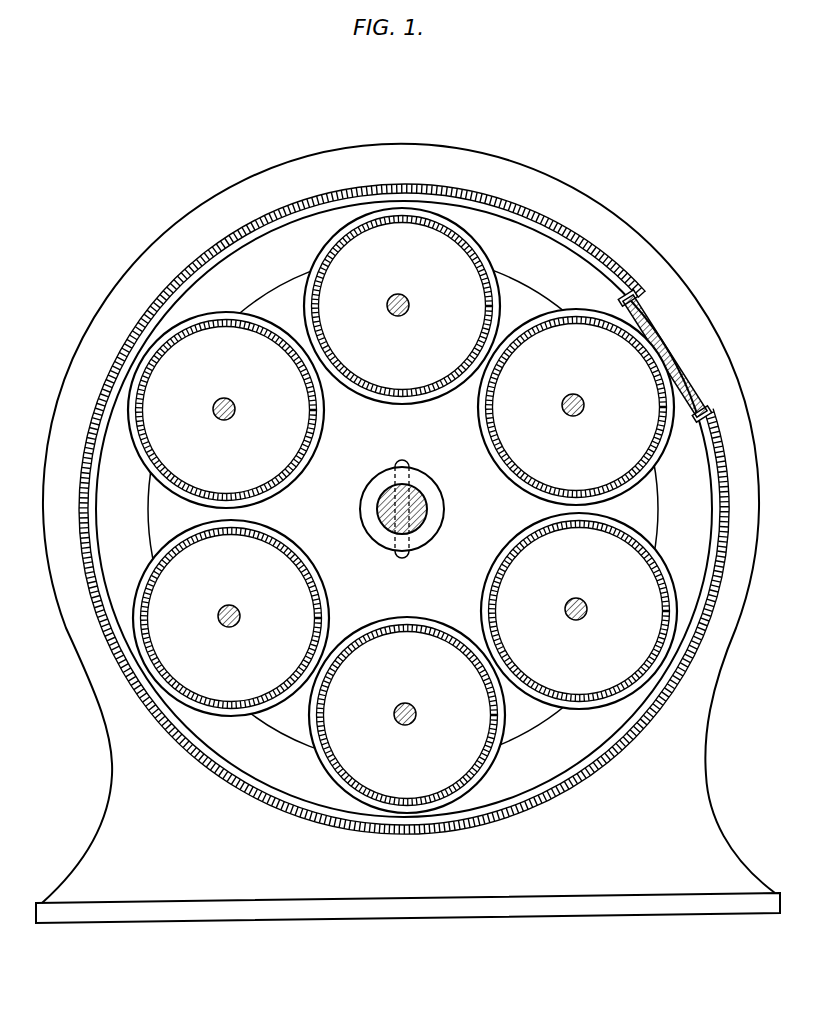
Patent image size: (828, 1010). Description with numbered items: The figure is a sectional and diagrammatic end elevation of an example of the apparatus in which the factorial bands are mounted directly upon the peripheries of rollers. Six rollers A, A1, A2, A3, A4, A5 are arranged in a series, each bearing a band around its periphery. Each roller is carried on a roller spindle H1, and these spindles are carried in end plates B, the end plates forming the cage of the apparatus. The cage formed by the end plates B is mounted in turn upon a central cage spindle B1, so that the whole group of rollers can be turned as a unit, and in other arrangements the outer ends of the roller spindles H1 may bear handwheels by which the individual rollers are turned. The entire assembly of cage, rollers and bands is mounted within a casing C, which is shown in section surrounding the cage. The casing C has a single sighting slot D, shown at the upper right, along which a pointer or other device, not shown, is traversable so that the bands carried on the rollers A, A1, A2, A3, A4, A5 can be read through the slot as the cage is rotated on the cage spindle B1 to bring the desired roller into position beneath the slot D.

The roller A is at (576, 407).
The roller A1 is at (579, 611).
The roller A2 is at (407, 715).
The roller A3 is at (231, 618).
The roller A4 is at (226, 410).
The roller A5 is at (402, 306).
The roller spindle H1 is at (406, 313).
The end plate B is at (284, 293).
The cage spindle B1 is at (418, 510).
The casing C is at (182, 278).
The sighting slot D is at (661, 358).